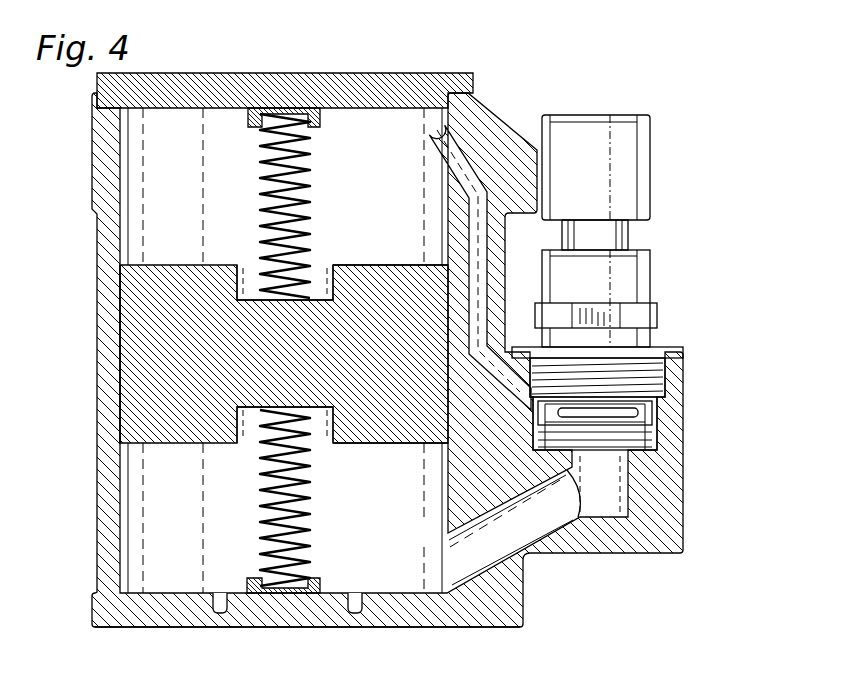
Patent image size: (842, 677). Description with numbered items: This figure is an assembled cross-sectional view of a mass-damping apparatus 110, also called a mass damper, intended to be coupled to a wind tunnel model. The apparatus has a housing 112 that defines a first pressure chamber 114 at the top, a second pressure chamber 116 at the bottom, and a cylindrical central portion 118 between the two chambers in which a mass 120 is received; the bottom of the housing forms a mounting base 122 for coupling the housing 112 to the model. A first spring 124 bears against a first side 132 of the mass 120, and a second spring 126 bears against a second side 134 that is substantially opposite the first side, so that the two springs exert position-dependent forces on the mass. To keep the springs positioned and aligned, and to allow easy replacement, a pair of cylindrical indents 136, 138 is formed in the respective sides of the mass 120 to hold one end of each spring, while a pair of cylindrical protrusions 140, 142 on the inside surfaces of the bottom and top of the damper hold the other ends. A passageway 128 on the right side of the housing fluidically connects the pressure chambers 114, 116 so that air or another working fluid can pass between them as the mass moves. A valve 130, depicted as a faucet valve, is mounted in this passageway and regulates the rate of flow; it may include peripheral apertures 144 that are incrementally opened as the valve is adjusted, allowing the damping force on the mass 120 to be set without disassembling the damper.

The mass-damping apparatus 110 is at (603, 62).
The housing 112 is at (93, 183).
The first pressure chamber 114 is at (392, 155).
The second pressure chamber 116 is at (380, 527).
The cylindrical central portion 118 is at (124, 305).
The mass 120 is at (137, 343).
The mounting base 122 is at (138, 627).
The first spring 124 is at (310, 538).
The second spring 126 is at (310, 200).
The passageway 128 is at (541, 513).
The valve 130 is at (697, 260).
The first side 132 is at (372, 444).
The second side 134 is at (360, 264).
The cylindrical indent 136 is at (244, 435).
The cylindrical indent 138 is at (244, 272).
The cylindrical protrusion 140 is at (256, 578).
The cylindrical protrusion 142 is at (262, 126).
The peripheral apertures 144 is at (640, 417).